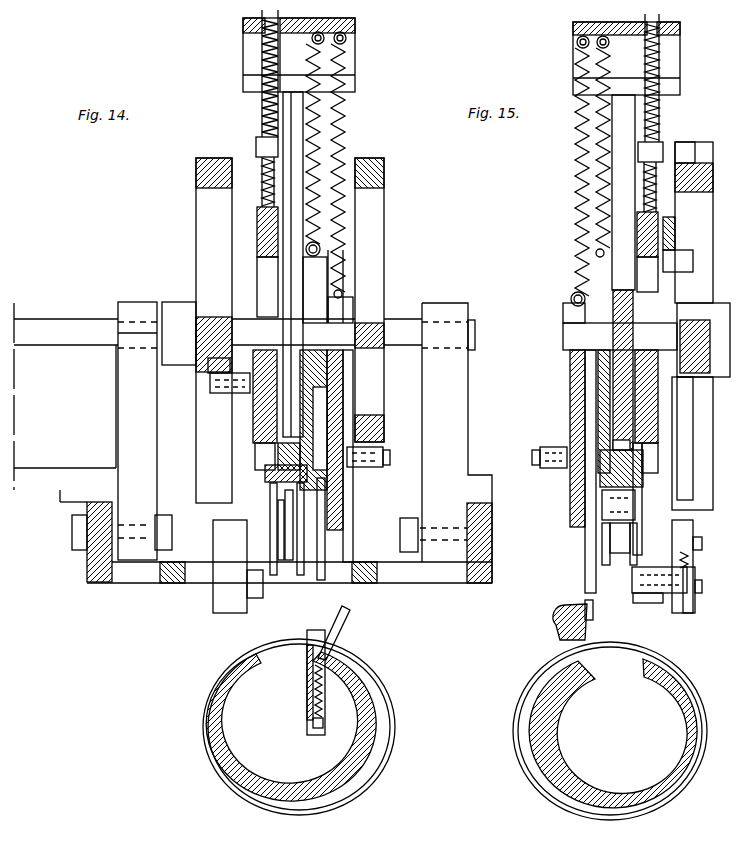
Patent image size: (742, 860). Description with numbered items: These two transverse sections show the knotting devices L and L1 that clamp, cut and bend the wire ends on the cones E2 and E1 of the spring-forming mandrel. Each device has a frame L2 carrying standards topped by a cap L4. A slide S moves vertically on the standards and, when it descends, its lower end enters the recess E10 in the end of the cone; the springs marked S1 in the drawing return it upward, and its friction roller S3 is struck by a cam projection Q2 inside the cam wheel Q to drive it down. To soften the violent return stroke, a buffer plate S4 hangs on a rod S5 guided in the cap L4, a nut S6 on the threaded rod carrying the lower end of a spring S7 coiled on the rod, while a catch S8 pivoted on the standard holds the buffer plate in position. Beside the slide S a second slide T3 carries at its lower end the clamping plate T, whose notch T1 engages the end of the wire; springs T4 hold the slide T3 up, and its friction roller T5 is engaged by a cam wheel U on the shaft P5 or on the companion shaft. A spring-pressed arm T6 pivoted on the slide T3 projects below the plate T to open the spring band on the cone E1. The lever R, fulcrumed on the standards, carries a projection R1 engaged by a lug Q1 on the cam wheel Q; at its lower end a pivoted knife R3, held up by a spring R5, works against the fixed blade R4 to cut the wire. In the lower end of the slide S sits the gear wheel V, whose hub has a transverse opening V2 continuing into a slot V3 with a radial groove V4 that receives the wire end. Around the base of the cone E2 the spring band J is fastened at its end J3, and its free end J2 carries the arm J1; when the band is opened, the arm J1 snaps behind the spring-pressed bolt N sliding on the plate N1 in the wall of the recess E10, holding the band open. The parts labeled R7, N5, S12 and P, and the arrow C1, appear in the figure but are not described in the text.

In FIG. 14, the cap L4 is at (346, 38).
In FIG. 15, the cap L4 is at (575, 34).
In FIG. 14, the spring S7 is at (262, 45).
In FIG. 15, the spring S7 is at (662, 68).
In FIG. 14, the spring S1 is at (312, 72).
In FIG. 15, the spring S1 is at (642, 505).
In FIG. 14, the nut S6 is at (262, 143).
In FIG. 15, the nut S6 is at (660, 152).
In FIG. 14, the rod S5 is at (255, 182).
In FIG. 15, the rod S5 is at (660, 175).
In FIG. 14, the buffer plate S4 is at (262, 228).
In FIG. 15, the buffer plate S4 is at (656, 252).
In FIG. 14, the slide S is at (272, 292).
In FIG. 15, the slide S is at (612, 285).
In FIG. 14, the knotting device L is at (202, 330).
In FIG. 14, the gear wheel V is at (360, 158).
In FIG. 15, the gear wheel V is at (622, 435).
In FIG. 14, the notch T1 is at (343, 242).
In FIG. 15, the notch T1 is at (548, 470).
In FIG. 14, the shaft P5 is at (75, 322).
In FIG. 14, the frame L2 is at (482, 503).
In FIG. 14, the cam projection Q2 is at (208, 372).
In FIG. 15, the cam projection Q2 is at (709, 340).
In FIG. 14, the cam wheel Q is at (200, 424).
In FIG. 15, the cam wheel Q is at (705, 425).
In FIG. 14, the friction roller S3 is at (222, 395).
In FIG. 14, the cam wheel U is at (392, 398).
In FIG. 14, the slide T3 is at (345, 510).
In FIG. 15, the slide T3 is at (575, 402).
In FIG. 14, the clamping plate T is at (327, 540).
In FIG. 15, the clamping plate T is at (582, 558).
In FIG. 14, the friction roller T5 is at (372, 468).
In FIG. 14, the groove V4 is at (285, 520).
In FIG. 14, the lever R is at (222, 587).
In FIG. 15, the lever R is at (693, 520).
In FIG. 14, the lever end R7 is at (258, 588).
In FIG. 15, the lever end R7 is at (660, 552).
In FIG. 14, the spring band J is at (306, 727).
In FIG. 14, the free end J2 is at (291, 718).
In FIG. 15, the free end J2 is at (560, 652).
In FIG. 14, the fastened end J3 is at (256, 654).
In FIG. 15, the fastened end J3 is at (646, 660).
In FIG. 14, the arm J1 is at (345, 620).
In FIG. 15, the arm J1 is at (558, 612).
In FIG. 14, the recess E10 is at (307, 650).
In FIG. 15, the recess E10 is at (640, 665).
In FIG. 14, the spring-pressed bolt N is at (307, 672).
In FIG. 14, the plate N1 is at (314, 712).
In FIG. 14, the nut N5 is at (340, 700).
In FIG. 14, the cone E2 is at (263, 736).
In FIG. 14, the direction arrow C1 is at (168, 712).
In FIG. 15, the direction arrow C1 is at (510, 660).
In FIG. 15, the springs T4 is at (575, 126).
In FIG. 15, the knotting device L1 is at (580, 180).
In FIG. 15, the spring end S12 is at (578, 228).
In FIG. 15, the catch S8 is at (693, 265).
In FIG. 15, the bar P is at (578, 338).
In FIG. 15, the lug Q1 is at (690, 500).
In FIG. 15, the transverse opening V2 is at (602, 504).
In FIG. 15, the slot V3 is at (602, 535).
In FIG. 15, the projection R1 is at (702, 543).
In FIG. 15, the spring R5 is at (690, 562).
In FIG. 15, the blade R4 is at (695, 600).
In FIG. 15, the spring-pressed arm T6 is at (632, 580).
In FIG. 15, the knife R3 is at (660, 595).
In FIG. 15, the cone E1 is at (632, 707).